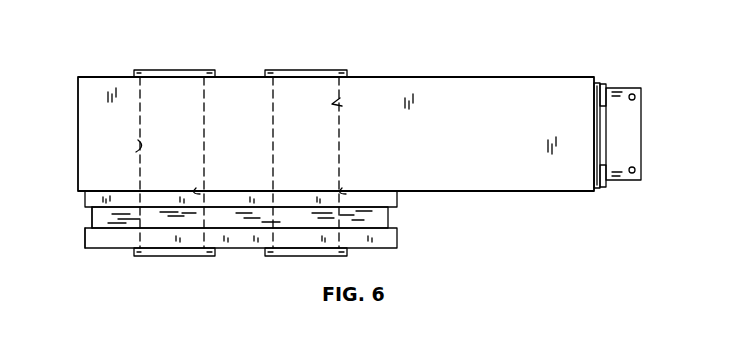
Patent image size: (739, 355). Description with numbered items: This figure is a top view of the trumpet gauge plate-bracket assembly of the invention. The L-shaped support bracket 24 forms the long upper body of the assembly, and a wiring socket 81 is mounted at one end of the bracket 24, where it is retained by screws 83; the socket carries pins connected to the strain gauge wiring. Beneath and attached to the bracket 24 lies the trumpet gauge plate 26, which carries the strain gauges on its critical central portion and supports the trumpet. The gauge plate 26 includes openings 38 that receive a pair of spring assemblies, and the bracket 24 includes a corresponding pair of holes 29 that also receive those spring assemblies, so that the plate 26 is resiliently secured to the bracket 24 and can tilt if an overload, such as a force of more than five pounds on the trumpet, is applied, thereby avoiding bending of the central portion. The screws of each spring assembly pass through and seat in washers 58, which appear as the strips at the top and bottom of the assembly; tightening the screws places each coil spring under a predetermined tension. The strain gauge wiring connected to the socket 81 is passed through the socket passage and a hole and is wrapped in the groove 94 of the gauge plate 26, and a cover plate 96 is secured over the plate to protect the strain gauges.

The bracket 24 is at (420, 72).
The gauge plate 26 is at (407, 215).
The holes 29 is at (141, 148).
The openings 38 is at (196, 188).
The washers 58 is at (152, 70).
The wiring socket 81 is at (641, 125).
The screws 83 is at (603, 84).
The groove 94 is at (96, 219).
The cover plate 96 is at (98, 252).